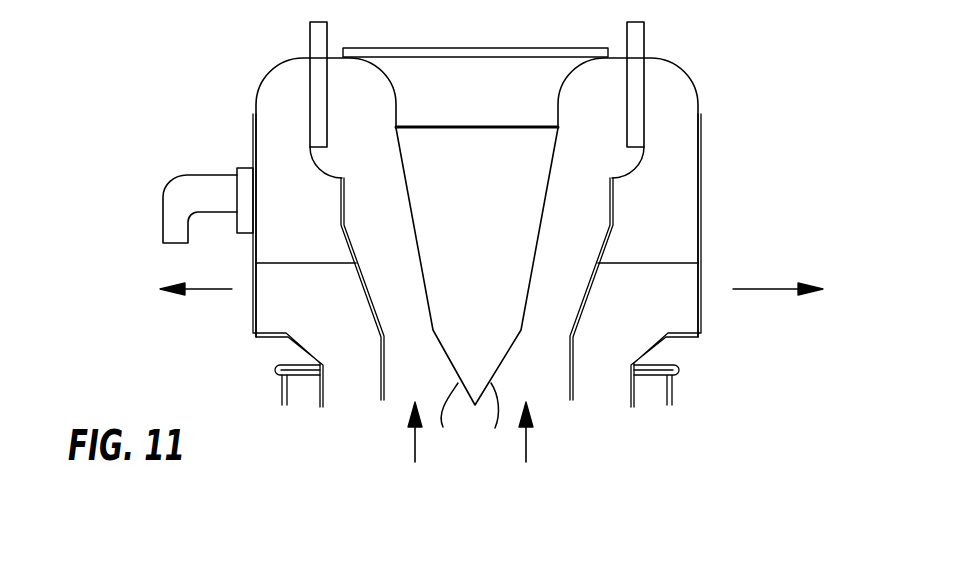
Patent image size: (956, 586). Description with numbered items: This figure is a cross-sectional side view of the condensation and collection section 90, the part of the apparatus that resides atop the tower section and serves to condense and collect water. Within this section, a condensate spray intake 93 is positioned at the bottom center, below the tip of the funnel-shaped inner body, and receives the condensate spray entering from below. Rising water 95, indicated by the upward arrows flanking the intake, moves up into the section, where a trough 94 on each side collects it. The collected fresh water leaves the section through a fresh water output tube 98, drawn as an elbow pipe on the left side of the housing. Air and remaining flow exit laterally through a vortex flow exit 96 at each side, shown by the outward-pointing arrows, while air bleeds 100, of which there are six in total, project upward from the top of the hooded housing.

The condensation and collection section 90 is at (138, 62).
The condensate spray intake 93 is at (469, 419).
The trough 94 is at (318, 263).
The rising water 95 is at (410, 457).
The vortex flow exit 96 is at (252, 314).
The fresh water output tube 98 is at (167, 187).
The air bleeds 100 is at (329, 33).